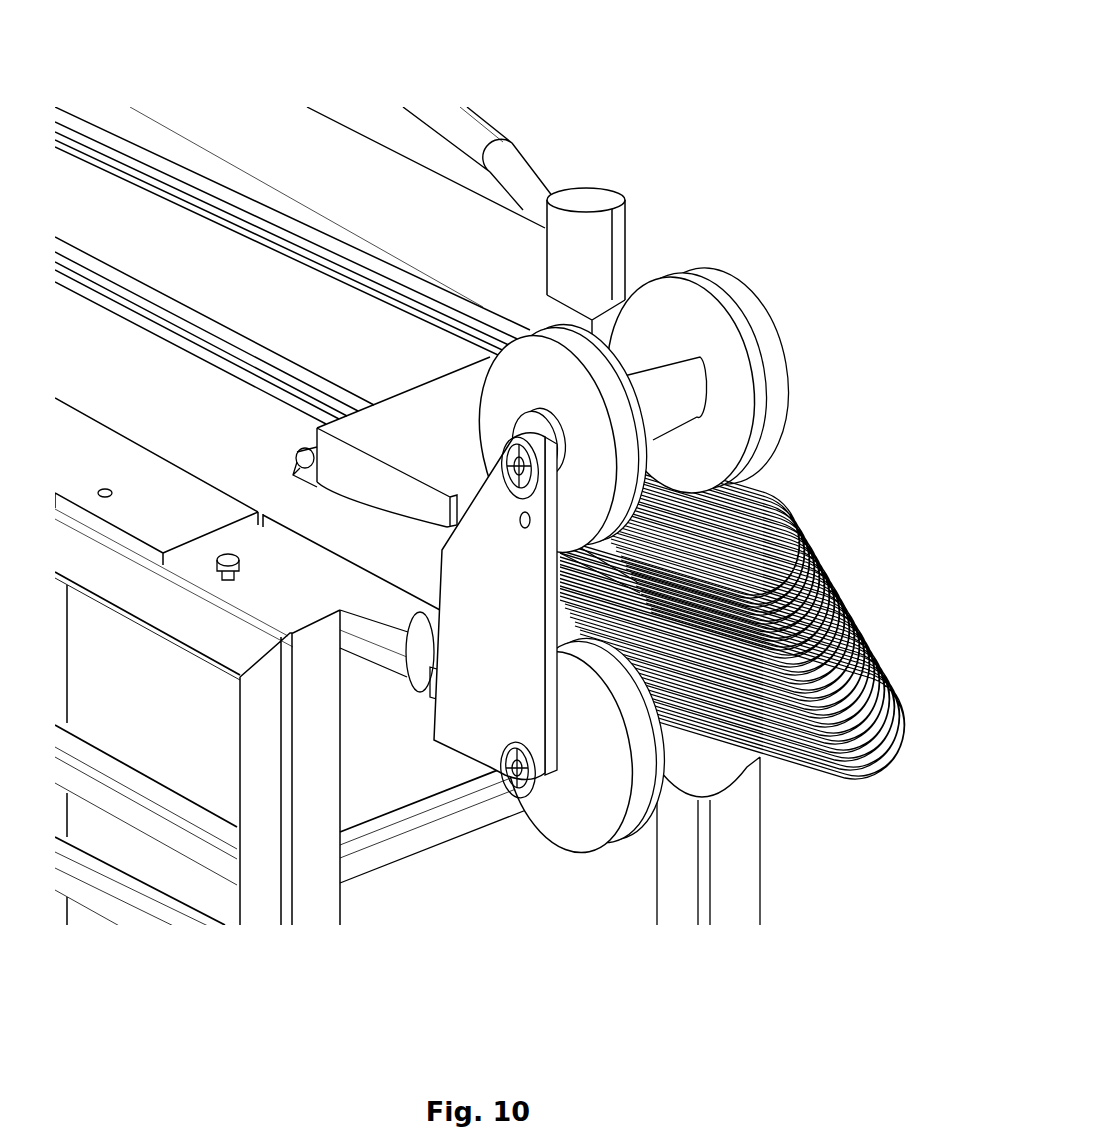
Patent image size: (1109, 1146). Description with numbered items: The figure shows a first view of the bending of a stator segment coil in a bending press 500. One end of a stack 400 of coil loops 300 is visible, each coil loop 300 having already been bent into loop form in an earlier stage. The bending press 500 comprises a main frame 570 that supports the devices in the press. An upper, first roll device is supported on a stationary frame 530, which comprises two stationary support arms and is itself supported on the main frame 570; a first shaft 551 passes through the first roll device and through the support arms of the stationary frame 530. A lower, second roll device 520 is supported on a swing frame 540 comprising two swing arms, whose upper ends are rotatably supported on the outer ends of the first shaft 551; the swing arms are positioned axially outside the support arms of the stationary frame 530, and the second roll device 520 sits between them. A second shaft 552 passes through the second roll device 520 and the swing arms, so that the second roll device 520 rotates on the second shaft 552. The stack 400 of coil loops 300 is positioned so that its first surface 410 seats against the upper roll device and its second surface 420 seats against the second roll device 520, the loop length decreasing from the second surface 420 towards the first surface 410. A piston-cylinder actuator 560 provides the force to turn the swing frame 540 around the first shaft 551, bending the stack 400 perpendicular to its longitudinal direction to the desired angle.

The bending press 500 is at (716, 96).
The second roll device 520 is at (565, 828).
The stationary frame 530 is at (527, 419).
The swing frame 540 is at (495, 616).
The first shaft 551 is at (508, 478).
The second shaft 552 is at (510, 760).
The piston-cylinder actuator 560 is at (372, 650).
The main frame 570 is at (315, 903).
The coil loop 300 is at (733, 631).
The stack of coil loops 400 is at (733, 631).
The first surface 410 is at (784, 525).
The second surface 420 is at (851, 766).